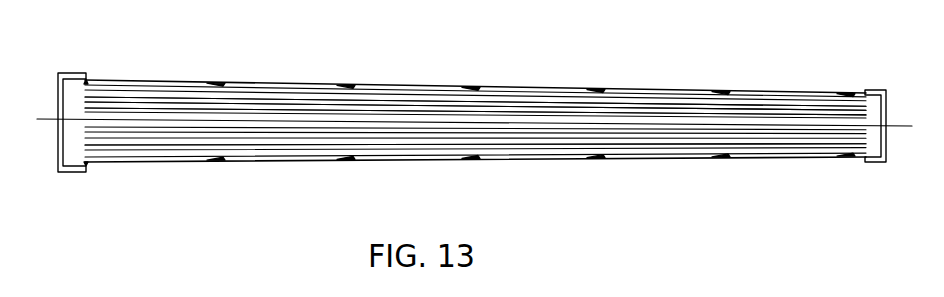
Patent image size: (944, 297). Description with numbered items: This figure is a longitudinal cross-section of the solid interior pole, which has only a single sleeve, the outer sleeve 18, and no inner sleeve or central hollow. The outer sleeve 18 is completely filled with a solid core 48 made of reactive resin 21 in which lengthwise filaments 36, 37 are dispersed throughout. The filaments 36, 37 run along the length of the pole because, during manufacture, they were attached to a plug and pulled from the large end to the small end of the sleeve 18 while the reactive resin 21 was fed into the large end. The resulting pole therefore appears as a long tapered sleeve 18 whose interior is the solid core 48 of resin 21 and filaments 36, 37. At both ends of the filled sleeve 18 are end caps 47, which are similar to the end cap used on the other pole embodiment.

The outer sleeve 18 is at (578, 64).
The reactive resin 21 is at (255, 128).
The reinforcing fiber 36 is at (676, 108).
The reinforcing fiber 37 is at (692, 108).
The end cap 47 is at (69, 73).
The solid core 48 is at (400, 108).